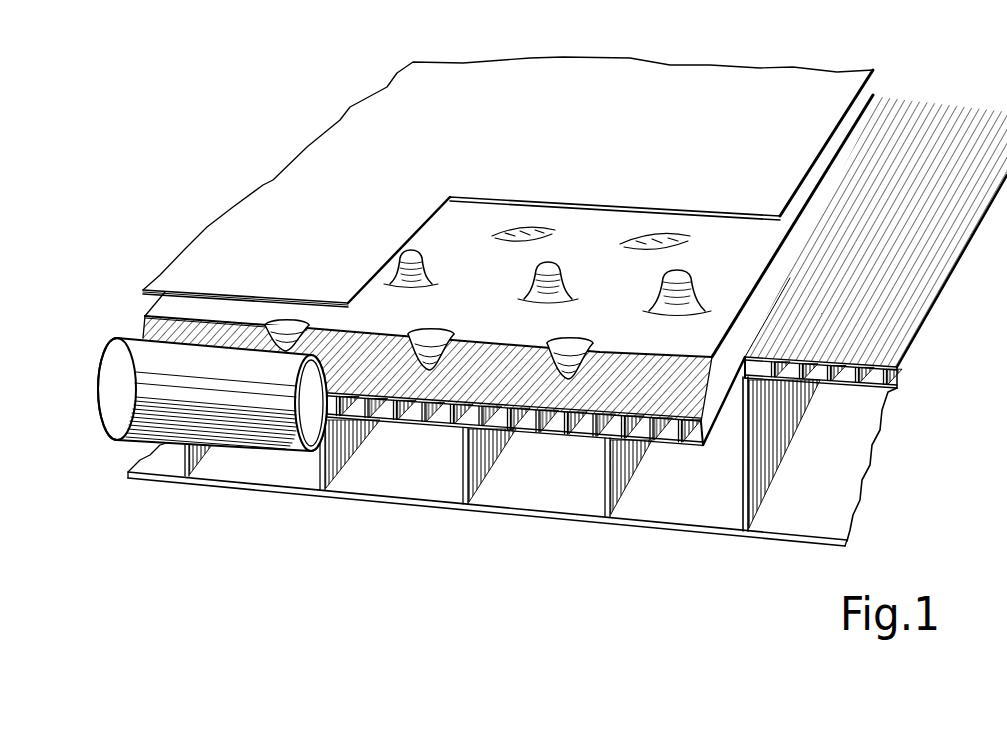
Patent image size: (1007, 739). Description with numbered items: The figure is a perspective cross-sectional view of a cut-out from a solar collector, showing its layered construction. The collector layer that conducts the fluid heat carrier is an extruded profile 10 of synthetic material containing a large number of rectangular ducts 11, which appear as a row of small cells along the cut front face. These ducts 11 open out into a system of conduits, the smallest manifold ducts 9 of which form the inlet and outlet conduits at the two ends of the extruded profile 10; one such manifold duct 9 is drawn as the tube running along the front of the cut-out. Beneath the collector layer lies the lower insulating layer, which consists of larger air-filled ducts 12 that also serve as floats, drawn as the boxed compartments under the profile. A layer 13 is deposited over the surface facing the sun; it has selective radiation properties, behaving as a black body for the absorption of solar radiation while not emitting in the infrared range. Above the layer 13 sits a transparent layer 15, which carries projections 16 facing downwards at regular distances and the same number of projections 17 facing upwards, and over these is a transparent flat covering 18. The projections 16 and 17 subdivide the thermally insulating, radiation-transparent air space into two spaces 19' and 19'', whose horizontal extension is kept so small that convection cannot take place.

The manifold duct 9 is at (147, 403).
The extruded profile 10 is at (582, 437).
The rectangular ducts 11 is at (669, 434).
The air-filled ducts 12 is at (398, 467).
The selective layer 13 is at (893, 350).
The transparent layer 15 is at (751, 296).
The downward projections 16 is at (283, 324).
The upward projections 17 is at (398, 263).
The transparent flat covering 18 is at (370, 135).
The first air space 19' is at (183, 291).
The second air space 19'' is at (236, 260).